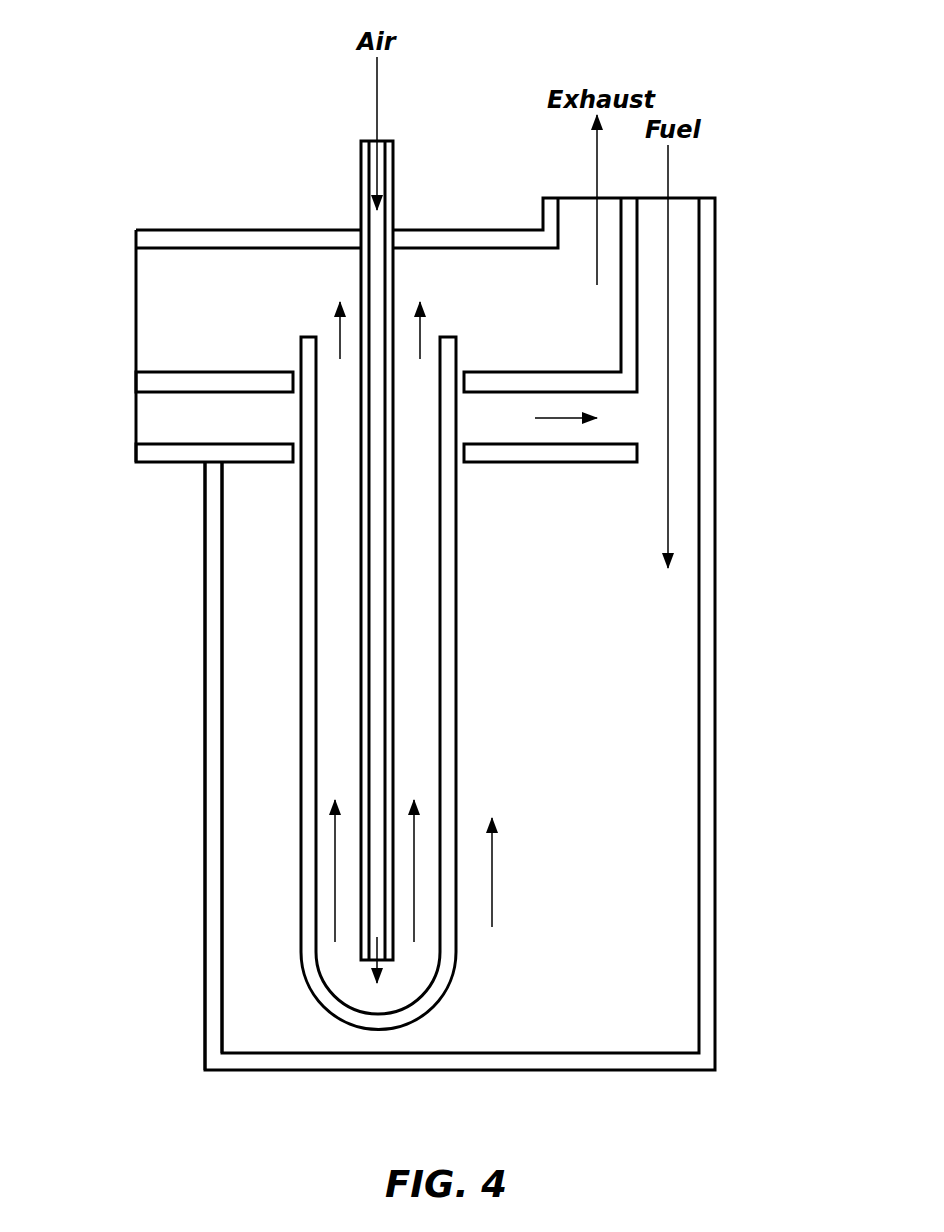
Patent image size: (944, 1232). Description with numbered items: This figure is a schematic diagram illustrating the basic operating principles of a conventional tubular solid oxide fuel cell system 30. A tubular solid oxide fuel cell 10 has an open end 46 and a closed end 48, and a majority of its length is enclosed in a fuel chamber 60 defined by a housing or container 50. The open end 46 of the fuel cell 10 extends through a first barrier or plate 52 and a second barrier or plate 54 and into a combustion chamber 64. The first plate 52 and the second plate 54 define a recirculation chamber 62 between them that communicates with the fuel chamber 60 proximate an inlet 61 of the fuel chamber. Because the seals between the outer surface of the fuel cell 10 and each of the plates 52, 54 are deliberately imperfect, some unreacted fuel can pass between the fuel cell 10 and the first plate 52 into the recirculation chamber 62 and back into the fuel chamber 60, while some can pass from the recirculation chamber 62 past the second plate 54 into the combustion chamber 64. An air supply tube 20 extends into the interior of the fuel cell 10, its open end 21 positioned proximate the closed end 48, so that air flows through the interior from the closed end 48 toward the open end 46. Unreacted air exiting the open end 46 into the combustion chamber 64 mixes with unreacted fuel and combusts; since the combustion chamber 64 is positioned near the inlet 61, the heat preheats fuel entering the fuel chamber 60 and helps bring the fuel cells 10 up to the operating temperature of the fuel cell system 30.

The fuel cell system 30 is at (157, 110).
The air supply tube 20 is at (360, 204).
The open end of air supply tube 21 is at (363, 962).
The open end of fuel cell 46 is at (325, 338).
The closed end of fuel cell 48 is at (447, 1010).
The tubular solid oxide fuel cell 10 is at (282, 633).
The housing or container 50 is at (716, 760).
The first barrier or plate 52 is at (162, 452).
The second barrier or plate 54 is at (155, 380).
The fuel chamber 60 is at (640, 901).
The inlet 61 is at (690, 192).
The recirculation chamber 62 is at (570, 402).
The combustion chamber 64 is at (505, 287).